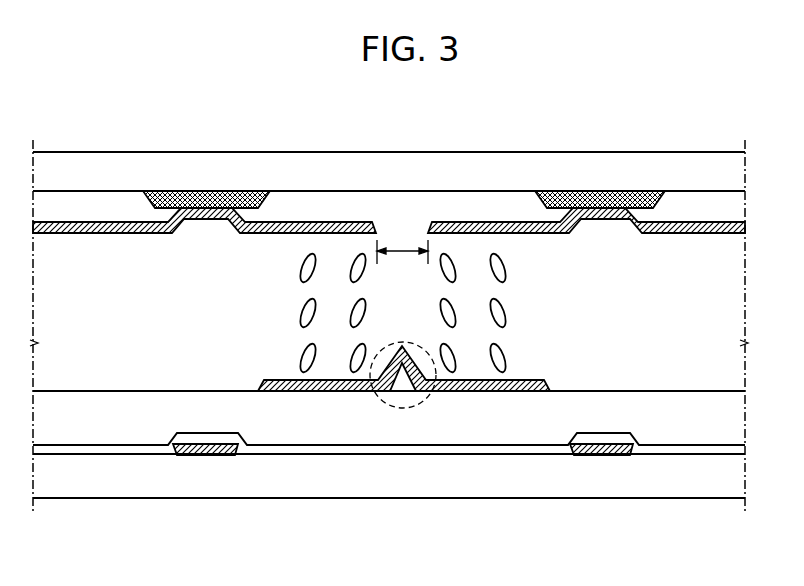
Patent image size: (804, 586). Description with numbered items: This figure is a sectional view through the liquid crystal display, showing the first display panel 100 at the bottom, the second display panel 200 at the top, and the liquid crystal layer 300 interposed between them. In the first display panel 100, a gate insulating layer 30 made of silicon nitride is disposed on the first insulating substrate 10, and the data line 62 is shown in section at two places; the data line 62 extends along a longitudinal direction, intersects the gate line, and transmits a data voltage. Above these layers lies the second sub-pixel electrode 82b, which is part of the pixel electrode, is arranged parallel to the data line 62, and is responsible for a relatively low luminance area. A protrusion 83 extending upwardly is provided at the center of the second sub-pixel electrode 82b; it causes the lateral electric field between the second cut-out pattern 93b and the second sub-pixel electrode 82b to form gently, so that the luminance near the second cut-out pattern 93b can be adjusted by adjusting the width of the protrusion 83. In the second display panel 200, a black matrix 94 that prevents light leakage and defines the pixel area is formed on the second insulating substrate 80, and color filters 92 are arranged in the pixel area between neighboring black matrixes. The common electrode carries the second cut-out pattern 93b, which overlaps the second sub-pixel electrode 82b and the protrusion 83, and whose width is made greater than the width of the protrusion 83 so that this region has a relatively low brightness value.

The first insulating substrate 10 is at (692, 473).
The gate insulating layer 30 is at (495, 452).
The data line 62 is at (201, 456).
The second sub-pixel electrode 82b is at (317, 392).
The protrusion 83 is at (403, 408).
The first display panel 100 is at (750, 391).
The upper substrate 80 is at (648, 185).
The color filters 92 is at (470, 200).
The second cut-out pattern 93b is at (403, 228).
The black matrix 94 is at (198, 190).
The second display panel 200 is at (750, 152).
The liquid crystal layer 300 is at (750, 391).